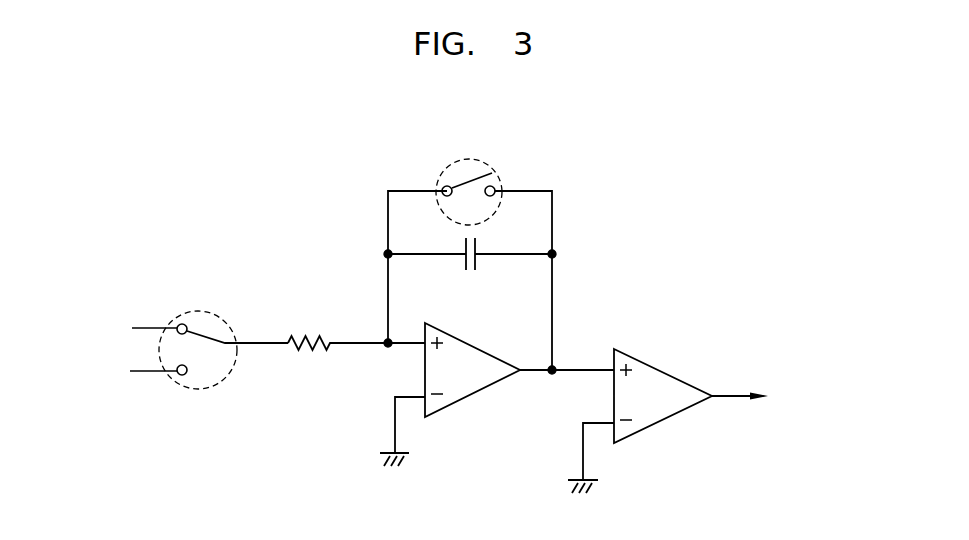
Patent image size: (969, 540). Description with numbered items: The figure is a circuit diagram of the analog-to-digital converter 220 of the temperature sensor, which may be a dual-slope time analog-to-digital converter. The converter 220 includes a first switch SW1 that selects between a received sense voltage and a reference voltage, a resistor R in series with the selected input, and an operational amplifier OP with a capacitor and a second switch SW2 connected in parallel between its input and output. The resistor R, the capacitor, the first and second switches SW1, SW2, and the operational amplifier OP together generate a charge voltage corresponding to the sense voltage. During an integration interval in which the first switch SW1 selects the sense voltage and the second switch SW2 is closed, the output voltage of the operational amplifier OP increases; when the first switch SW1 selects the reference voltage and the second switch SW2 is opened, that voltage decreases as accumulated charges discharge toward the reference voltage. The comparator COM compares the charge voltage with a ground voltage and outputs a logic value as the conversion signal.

The analog-to-digital converter 220 is at (719, 190).
The first switch SW1 is at (209, 335).
The second switch SW2 is at (469, 177).
The resistor R is at (356, 332).
The operational amplifier OP is at (472, 370).
The comparator COM is at (663, 396).